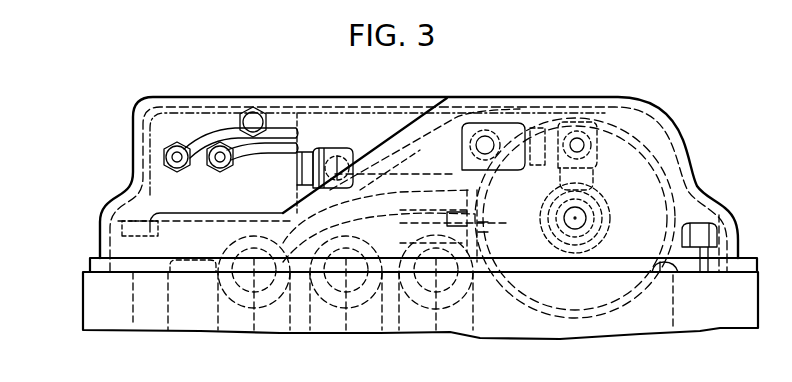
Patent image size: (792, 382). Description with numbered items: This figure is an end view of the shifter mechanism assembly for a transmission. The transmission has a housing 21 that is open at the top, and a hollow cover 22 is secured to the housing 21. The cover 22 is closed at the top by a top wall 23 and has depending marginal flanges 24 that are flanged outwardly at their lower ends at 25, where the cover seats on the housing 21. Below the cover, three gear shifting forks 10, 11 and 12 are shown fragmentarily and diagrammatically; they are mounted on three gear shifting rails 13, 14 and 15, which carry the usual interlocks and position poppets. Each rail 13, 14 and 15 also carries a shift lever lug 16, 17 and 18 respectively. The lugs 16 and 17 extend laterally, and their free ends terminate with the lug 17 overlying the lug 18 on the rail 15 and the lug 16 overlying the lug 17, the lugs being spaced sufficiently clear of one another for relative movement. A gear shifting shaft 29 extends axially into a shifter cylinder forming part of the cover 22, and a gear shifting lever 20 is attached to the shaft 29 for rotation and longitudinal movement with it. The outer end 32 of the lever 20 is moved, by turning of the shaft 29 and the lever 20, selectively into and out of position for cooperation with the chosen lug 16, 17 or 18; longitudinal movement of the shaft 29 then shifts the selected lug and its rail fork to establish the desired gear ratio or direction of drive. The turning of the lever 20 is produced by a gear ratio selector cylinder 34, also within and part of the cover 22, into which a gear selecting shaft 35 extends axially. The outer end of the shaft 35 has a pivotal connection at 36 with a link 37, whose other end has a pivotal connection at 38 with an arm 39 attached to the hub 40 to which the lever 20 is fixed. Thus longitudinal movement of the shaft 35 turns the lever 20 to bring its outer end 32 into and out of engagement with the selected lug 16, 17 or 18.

The gear shifting fork 10 is at (223, 330).
The gear shifting fork 11 is at (309, 328).
The gear shifting fork 12 is at (407, 330).
The gear shifting rail 13 is at (253, 331).
The gear shifting rail 14 is at (346, 331).
The gear shifting rail 15 is at (436, 331).
The shift lever lug 16 is at (297, 198).
The shift lever lug 17 is at (387, 198).
The shift lever lug 18 is at (487, 240).
The gear shifting lever 20 is at (521, 191).
The transmission housing 21 is at (83, 303).
The hollow cover 22 is at (181, 96).
The top wall 23 is at (257, 98).
The depending marginal flanges 24 is at (132, 174).
The outwardly flanged lower ends 25 is at (92, 258).
The gear shifting shaft 29 is at (588, 231).
The outer end of the lever 32 is at (498, 225).
The gear ratio selector cylinder 34 is at (284, 112).
The gear selecting shaft 35 is at (301, 150).
The pivotal connection 36 is at (339, 152).
The link 37 is at (402, 105).
The pivotal connection 38 is at (595, 155).
The arm 39 is at (594, 180).
The hub 40 is at (611, 221).